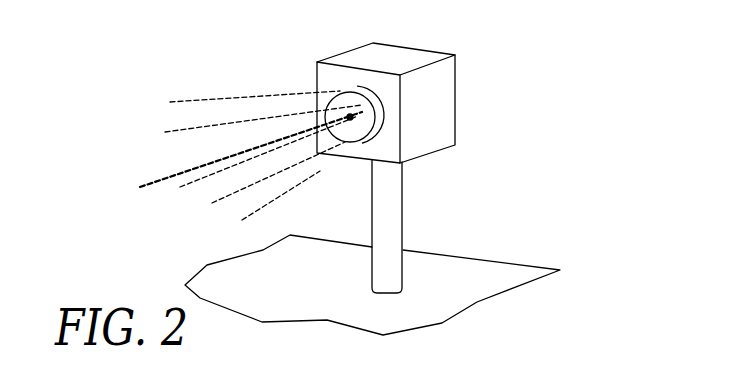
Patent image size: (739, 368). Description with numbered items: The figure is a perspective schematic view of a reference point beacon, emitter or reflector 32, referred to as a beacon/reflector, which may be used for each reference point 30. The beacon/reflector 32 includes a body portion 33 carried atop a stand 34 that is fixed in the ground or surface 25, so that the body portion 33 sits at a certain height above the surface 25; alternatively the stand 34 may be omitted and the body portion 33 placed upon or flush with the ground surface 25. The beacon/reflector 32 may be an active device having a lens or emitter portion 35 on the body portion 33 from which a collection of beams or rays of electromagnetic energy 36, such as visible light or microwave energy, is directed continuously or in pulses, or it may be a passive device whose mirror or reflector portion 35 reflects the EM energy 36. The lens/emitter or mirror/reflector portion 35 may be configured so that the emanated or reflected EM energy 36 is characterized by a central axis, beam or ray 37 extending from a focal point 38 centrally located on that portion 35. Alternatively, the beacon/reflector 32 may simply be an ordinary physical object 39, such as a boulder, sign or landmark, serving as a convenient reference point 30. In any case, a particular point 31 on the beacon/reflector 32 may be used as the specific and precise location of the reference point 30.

The ground or surface 25 is at (317, 281).
The reference point 30 is at (476, 94).
The particular point 31 is at (412, 84).
The beacon/reflector 32 is at (476, 94).
The body portion 33 is at (440, 97).
The stand 34 is at (393, 210).
The lens/emitter portion or mirror/reflector portion 35 is at (350, 130).
The EM energy 36 is at (249, 88).
The central axis, beam or ray 37 is at (163, 182).
The focal point 38 is at (352, 116).
The ordinary physical object 39 is at (476, 94).